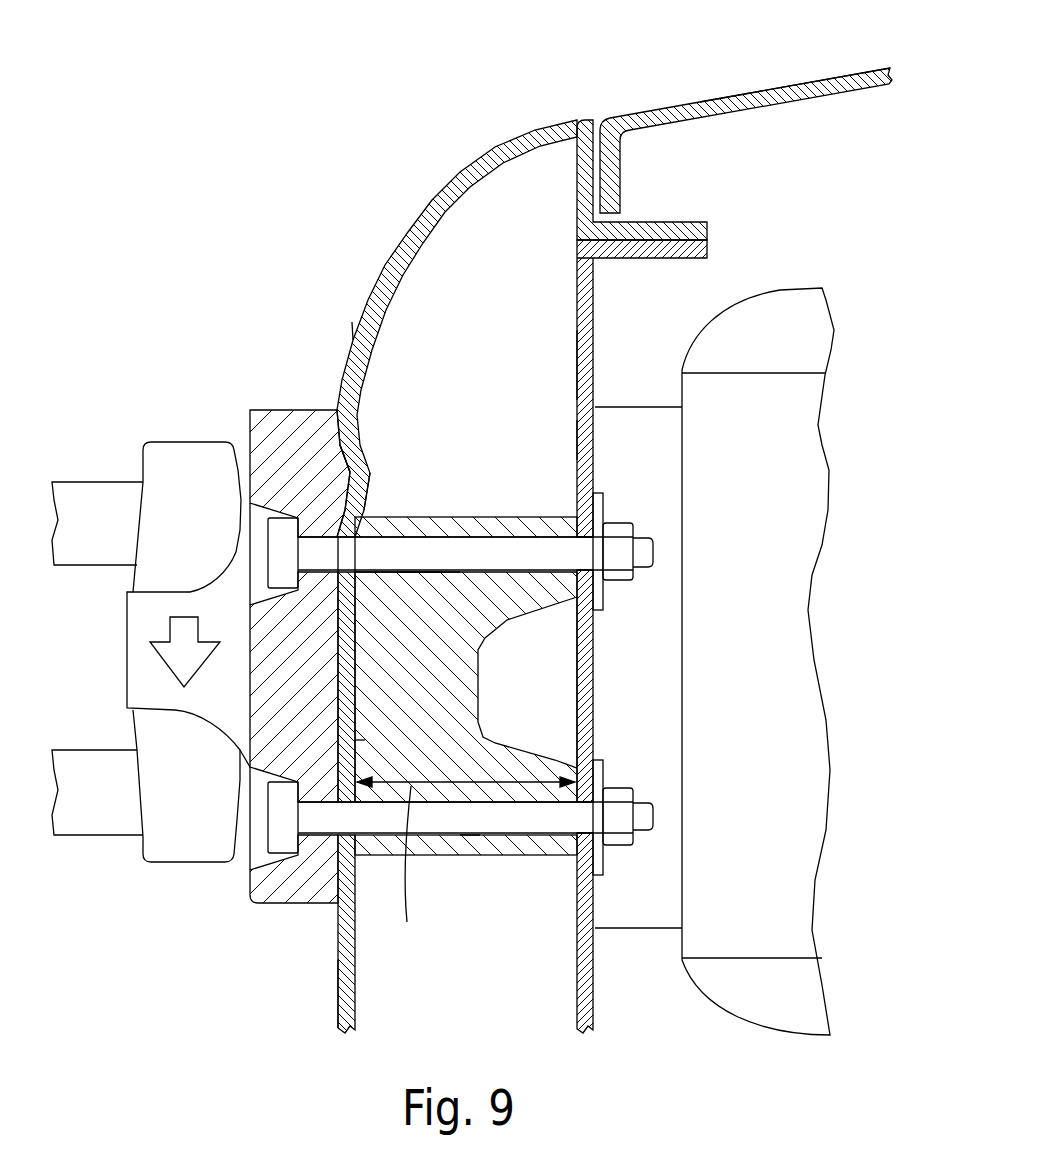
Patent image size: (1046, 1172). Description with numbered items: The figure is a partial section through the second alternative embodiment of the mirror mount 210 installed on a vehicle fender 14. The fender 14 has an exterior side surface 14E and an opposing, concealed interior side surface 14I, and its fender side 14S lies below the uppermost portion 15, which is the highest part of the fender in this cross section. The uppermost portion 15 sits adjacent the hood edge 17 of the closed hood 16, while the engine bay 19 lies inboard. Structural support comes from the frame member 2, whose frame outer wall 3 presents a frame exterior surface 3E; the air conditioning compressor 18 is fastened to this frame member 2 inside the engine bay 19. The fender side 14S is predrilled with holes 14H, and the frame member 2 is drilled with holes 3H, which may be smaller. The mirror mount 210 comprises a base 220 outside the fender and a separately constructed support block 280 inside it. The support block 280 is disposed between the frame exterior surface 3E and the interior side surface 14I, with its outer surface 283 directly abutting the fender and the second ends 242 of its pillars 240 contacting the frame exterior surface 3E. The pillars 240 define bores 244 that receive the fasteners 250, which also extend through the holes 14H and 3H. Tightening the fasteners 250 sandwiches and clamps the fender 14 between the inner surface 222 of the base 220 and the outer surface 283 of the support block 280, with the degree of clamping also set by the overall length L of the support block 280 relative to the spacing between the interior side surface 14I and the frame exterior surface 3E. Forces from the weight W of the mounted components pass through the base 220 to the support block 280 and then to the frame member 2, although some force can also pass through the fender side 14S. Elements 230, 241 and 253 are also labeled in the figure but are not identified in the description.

The frame member 2 is at (572, 288).
The frame outer wall 3 is at (576, 375).
The frame exterior surface 3E is at (576, 437).
The frame holes 3H is at (592, 572).
The fender 14 is at (398, 218).
The fender side 14S is at (352, 322).
The interior side surface 14I is at (368, 487).
The fender holes 14H is at (346, 572).
The exterior side surface 14E is at (338, 977).
The uppermost portion 15 is at (570, 112).
The hood 16 is at (752, 74).
The hood edge 17 is at (603, 125).
The air conditioning compressor 18 is at (710, 320).
The engine bay 19 is at (853, 226).
The mirror mount 210 is at (128, 910).
The base 220 is at (297, 398).
The inner surface of the base 222 is at (346, 462).
The support 230 is at (98, 767).
The pillars 240 is at (484, 515).
The spacer surface 241 is at (420, 590).
The second ends 242 is at (580, 588).
The bores 244 is at (458, 574).
The fasteners 250 is at (622, 525).
The washer 253 is at (622, 575).
The support block 280 is at (453, 505).
The support block outer surface 283 is at (360, 740).